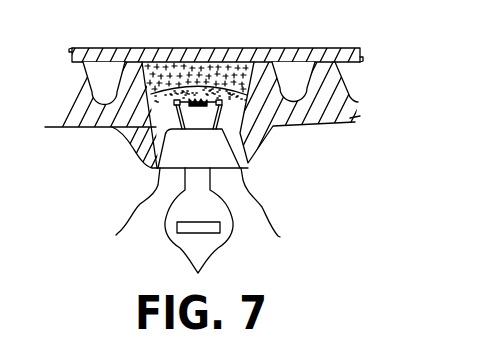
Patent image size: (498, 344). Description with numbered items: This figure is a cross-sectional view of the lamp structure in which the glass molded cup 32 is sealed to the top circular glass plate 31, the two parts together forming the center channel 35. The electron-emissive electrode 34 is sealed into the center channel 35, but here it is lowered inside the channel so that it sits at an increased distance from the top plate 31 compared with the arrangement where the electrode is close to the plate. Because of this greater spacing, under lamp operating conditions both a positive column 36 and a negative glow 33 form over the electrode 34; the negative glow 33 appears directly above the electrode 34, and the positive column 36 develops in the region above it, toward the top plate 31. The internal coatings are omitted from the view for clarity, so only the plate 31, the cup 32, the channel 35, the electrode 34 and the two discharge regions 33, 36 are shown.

The top circular glass plate 31 is at (281, 56).
The glass molded cup 32 is at (327, 125).
The negative glow region 33 is at (247, 161).
The electron-emissive electrode 34 is at (113, 131).
The center channel 35 is at (253, 167).
The positive column 36 is at (173, 71).